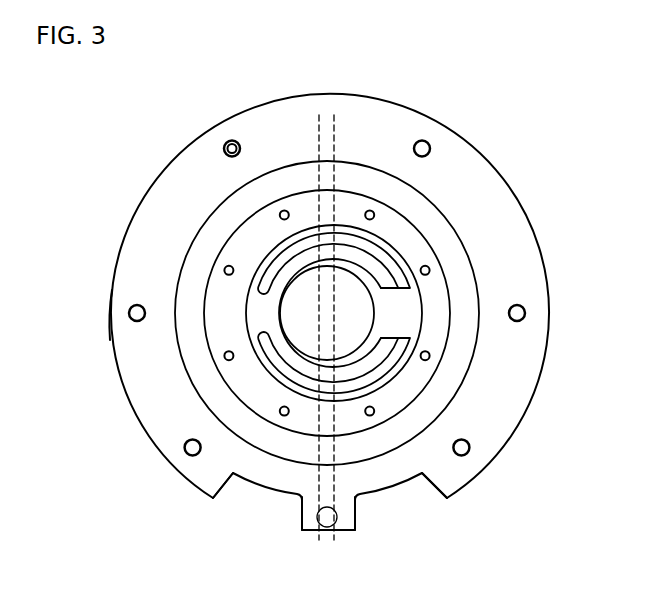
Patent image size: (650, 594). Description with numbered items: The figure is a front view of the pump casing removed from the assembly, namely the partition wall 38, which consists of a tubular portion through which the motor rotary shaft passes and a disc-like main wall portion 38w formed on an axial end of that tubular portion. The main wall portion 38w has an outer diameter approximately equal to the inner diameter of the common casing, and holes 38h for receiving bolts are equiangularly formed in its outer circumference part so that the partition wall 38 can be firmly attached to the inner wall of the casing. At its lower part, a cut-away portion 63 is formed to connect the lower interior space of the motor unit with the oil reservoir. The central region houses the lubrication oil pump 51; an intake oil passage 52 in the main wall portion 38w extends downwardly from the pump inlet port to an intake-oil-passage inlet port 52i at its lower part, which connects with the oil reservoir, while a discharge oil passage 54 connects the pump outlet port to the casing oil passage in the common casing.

The partition wall 38 is at (129, 124).
The holes 38h is at (421, 140).
The main wall portion 38w is at (124, 278).
The lubrication oil pump 51 is at (272, 275).
The intake oil passage 52 is at (328, 455).
The intake-oil-passage inlet port 52i is at (328, 518).
The discharge oil passage 54 is at (319, 190).
The cut-away portion 63 is at (398, 502).